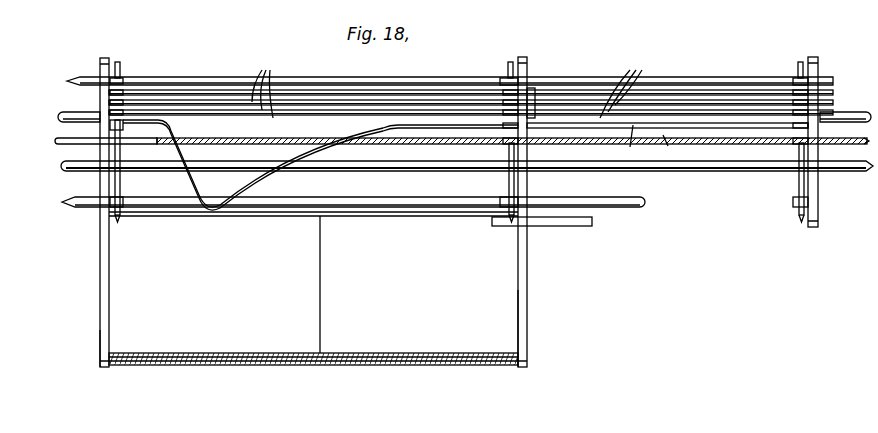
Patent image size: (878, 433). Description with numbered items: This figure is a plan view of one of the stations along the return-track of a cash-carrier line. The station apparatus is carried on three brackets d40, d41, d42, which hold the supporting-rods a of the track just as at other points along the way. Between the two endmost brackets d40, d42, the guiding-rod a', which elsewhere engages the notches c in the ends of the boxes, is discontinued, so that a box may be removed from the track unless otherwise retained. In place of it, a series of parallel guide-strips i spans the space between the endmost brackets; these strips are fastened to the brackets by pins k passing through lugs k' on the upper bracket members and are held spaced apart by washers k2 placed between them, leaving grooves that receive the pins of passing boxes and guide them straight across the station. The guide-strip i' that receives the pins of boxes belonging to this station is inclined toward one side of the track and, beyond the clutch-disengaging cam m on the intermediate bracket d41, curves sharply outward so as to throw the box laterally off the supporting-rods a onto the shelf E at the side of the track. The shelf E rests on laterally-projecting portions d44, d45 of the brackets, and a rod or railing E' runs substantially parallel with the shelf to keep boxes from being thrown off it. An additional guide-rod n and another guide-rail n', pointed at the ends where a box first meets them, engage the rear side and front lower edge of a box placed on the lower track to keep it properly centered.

The shelf E is at (260, 244).
The rod or railing E' is at (294, 284).
The supporting rods a is at (458, 137).
The guiding-rod a' is at (98, 149).
The notches c is at (268, 138).
The station bracket d40 is at (106, 110).
The intermediate station bracket d41 is at (528, 183).
The station bracket d42 is at (819, 76).
The laterally-projecting portion d44 is at (104, 344).
The laterally-projecting portion d45 is at (529, 320).
The guide-strips i is at (460, 104).
The inclined guide-strip i' is at (380, 165).
The pins k is at (459, 130).
The lugs k' is at (459, 135).
The washers k2 is at (529, 96).
The clutch-disengaging cam m is at (560, 228).
The guide-rod n is at (450, 70).
The guide-rail n' is at (367, 194).